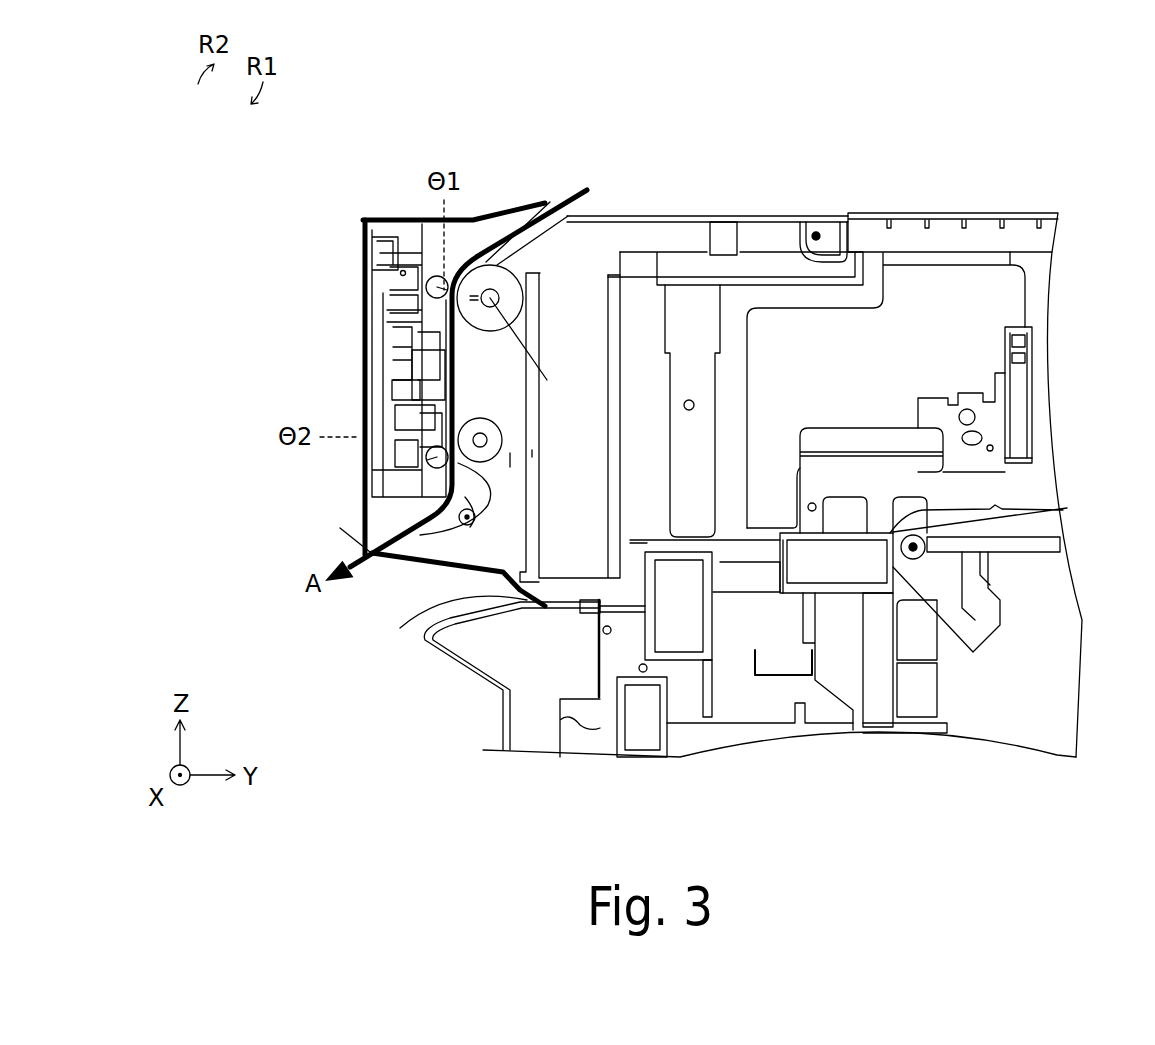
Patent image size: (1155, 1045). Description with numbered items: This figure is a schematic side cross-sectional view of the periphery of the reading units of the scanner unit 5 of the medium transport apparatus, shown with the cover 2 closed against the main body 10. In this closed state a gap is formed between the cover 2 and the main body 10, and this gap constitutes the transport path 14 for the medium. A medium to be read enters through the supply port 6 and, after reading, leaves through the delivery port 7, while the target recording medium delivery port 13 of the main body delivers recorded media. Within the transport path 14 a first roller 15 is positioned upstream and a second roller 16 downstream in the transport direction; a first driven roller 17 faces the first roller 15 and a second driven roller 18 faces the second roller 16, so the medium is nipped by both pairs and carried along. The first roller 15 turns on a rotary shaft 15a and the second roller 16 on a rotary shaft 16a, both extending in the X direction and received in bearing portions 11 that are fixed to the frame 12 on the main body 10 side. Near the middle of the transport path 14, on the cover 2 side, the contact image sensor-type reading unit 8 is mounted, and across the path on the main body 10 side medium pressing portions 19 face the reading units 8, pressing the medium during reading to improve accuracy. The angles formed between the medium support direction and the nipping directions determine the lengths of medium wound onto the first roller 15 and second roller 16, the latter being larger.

The cover 2 is at (362, 272).
The scanner unit 5 is at (347, 416).
The supply port 6 is at (573, 213).
The delivery port 7 is at (362, 530).
The contact image sensor-type reading unit 8 is at (425, 381).
The main body 10 is at (588, 388).
The bearing portion 11 is at (508, 452).
The frame 12 is at (532, 457).
The target recording medium delivery port 13 is at (478, 585).
The transport path 14 is at (523, 207).
The first roller 15 is at (520, 285).
The rotary shaft 15a is at (547, 380).
The second roller 16 is at (455, 548).
The rotary shaft 16a is at (480, 440).
The first driven roller 17 is at (430, 278).
The second driven roller 18 is at (395, 460).
The medium pressing portion 19 is at (455, 350).